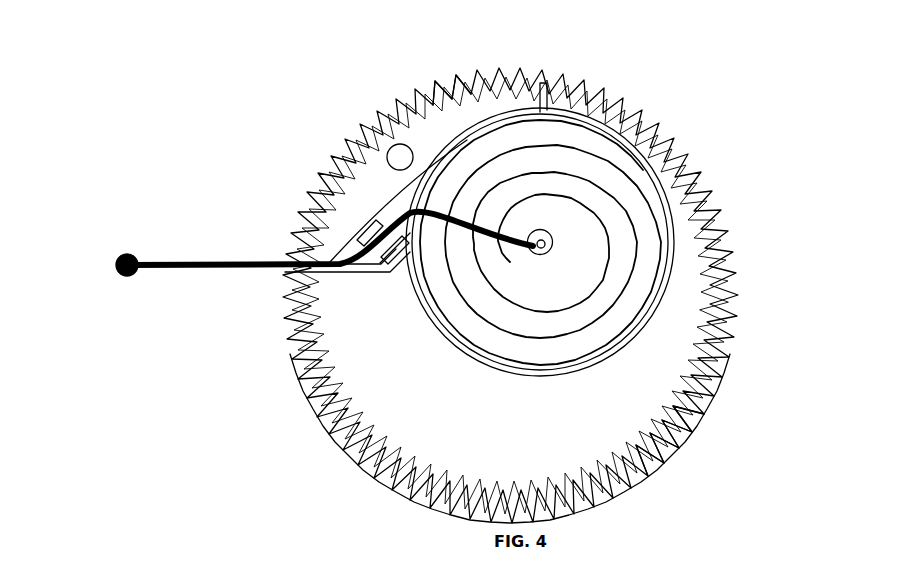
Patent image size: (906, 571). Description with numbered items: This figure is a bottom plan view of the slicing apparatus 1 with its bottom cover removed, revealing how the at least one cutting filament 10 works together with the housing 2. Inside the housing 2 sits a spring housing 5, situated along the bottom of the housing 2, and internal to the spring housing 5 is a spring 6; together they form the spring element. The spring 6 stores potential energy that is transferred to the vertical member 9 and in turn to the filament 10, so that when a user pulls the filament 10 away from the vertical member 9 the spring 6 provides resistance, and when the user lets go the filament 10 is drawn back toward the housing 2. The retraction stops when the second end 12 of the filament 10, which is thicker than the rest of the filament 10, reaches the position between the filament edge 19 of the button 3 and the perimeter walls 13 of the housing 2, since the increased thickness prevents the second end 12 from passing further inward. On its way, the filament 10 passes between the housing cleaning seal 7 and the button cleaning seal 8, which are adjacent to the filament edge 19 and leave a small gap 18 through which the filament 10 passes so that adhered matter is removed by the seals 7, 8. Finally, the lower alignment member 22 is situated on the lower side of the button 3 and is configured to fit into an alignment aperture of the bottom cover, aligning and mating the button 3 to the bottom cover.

The slicing apparatus 1 is at (760, 192).
The housing 2 is at (715, 339).
The button 3 is at (448, 117).
The spring housing 5 is at (647, 263).
The spring 6 is at (617, 233).
The housing cleaning seal 7 is at (373, 258).
The button cleaning seal 8 is at (368, 221).
The vertical member 9 is at (548, 240).
The cutting filament 10 is at (210, 267).
The second end 12 is at (117, 266).
The perimeter walls 13 is at (610, 505).
The gap 18 is at (540, 83).
The filament edge 19 is at (300, 264).
The lower alignment member 22 is at (388, 155).